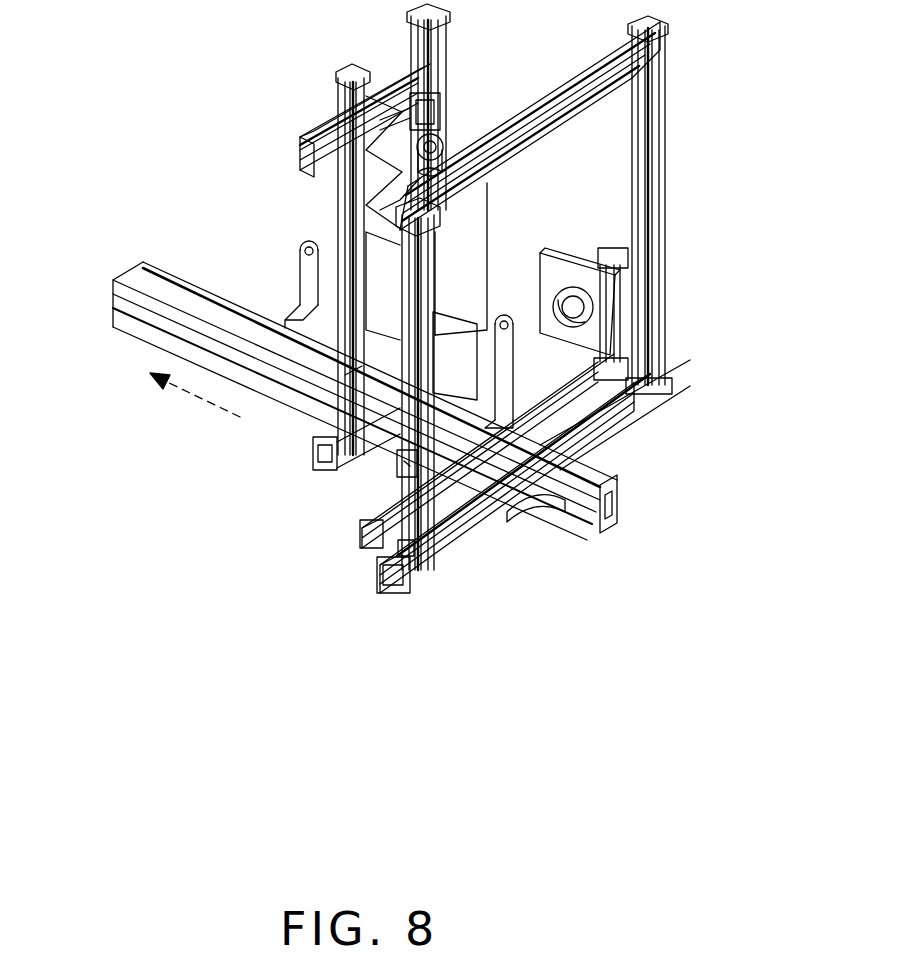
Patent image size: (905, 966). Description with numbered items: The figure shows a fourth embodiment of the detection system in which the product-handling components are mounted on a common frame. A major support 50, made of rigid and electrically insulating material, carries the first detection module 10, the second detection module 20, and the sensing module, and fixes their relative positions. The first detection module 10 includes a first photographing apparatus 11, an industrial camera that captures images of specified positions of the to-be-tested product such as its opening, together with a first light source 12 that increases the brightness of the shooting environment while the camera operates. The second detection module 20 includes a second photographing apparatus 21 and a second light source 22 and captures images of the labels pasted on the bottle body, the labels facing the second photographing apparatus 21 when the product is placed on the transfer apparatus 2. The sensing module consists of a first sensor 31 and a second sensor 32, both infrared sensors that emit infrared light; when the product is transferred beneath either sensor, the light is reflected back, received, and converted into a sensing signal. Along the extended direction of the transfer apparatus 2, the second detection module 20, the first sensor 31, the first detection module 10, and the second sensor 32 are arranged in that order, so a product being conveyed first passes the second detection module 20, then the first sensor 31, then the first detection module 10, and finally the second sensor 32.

The transfer apparatus 2 is at (600, 517).
The first detection module 10 is at (323, 137).
The first photographing apparatus 11 is at (403, 148).
The first light source 12 is at (382, 211).
The second detection module 20 is at (666, 314).
The second photographing apparatus 21 is at (597, 295).
The second light source 22 is at (590, 322).
The first sensor 31 is at (507, 334).
The second sensor 32 is at (298, 254).
The major support 50 is at (657, 200).